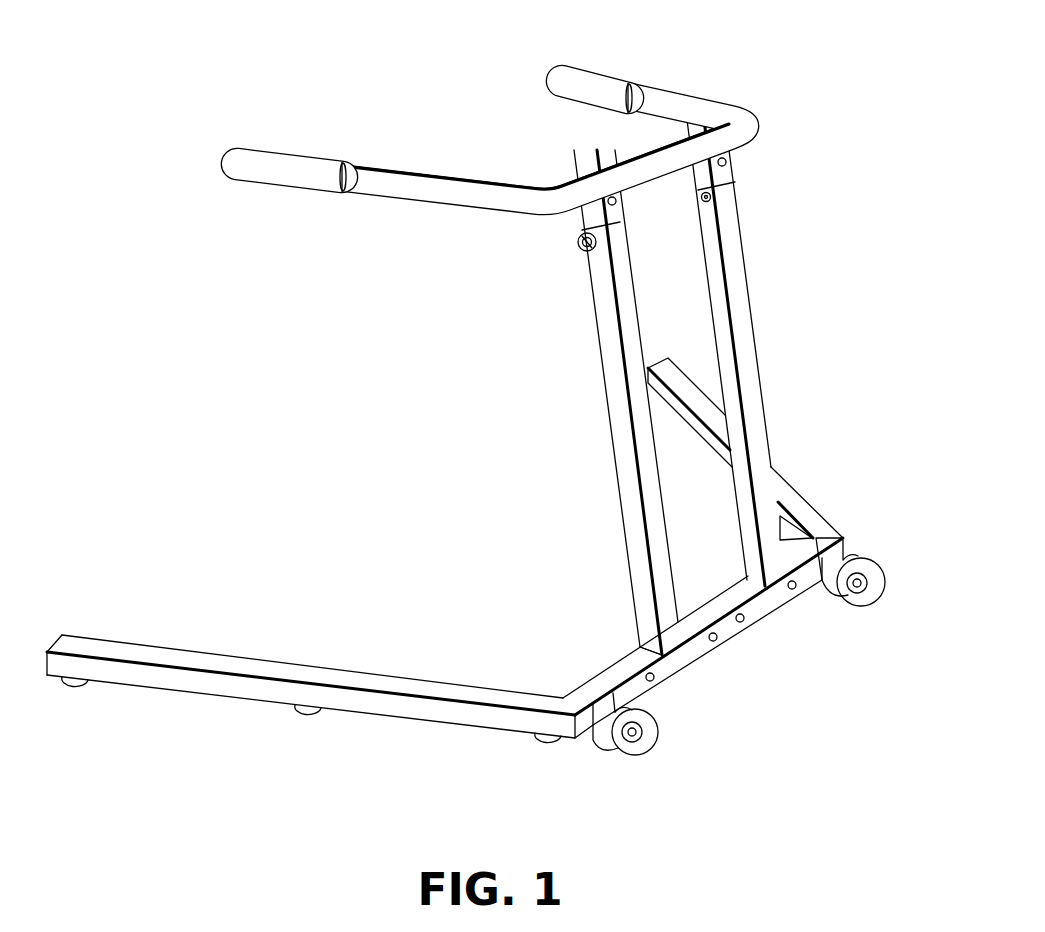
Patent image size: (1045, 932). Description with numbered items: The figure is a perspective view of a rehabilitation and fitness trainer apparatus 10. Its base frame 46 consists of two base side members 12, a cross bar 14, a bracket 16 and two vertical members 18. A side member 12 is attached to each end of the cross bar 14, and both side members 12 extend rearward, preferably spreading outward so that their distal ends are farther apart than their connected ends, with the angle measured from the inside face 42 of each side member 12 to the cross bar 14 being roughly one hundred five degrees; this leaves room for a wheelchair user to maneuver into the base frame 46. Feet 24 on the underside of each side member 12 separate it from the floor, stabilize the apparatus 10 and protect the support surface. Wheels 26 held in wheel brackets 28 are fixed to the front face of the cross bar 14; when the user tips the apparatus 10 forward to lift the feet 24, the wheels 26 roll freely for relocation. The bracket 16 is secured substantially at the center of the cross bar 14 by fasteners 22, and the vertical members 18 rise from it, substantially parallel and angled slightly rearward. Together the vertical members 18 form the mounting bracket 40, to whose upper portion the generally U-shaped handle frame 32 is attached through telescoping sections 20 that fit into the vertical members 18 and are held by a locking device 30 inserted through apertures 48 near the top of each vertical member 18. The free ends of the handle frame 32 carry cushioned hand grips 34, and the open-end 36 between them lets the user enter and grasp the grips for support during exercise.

The apparatus 10 is at (850, 336).
The base side member 12 is at (786, 493).
The cross bar 14 is at (813, 592).
The bracket 16 is at (636, 662).
The vertical member 18 is at (752, 308).
The telescoping section 20 is at (614, 216).
The fastener 22 is at (748, 622).
The foot 24 is at (72, 688).
The wheel 26 is at (654, 742).
The wheel bracket 28 is at (617, 734).
The locking device 30 is at (578, 246).
The handle frame 32 is at (692, 93).
The hand grip 34 is at (586, 80).
The open-end 36 is at (396, 402).
The mounting bracket 40 is at (610, 470).
The inside face 42 is at (702, 428).
The base frame 46 is at (366, 207).
The aperture 48 is at (711, 200).